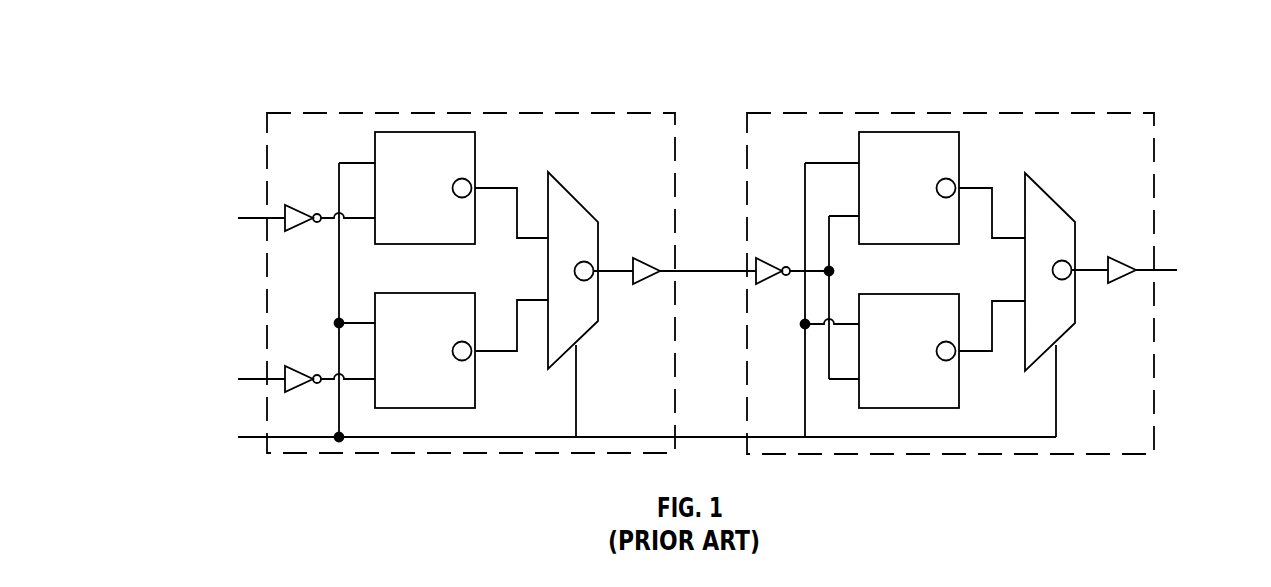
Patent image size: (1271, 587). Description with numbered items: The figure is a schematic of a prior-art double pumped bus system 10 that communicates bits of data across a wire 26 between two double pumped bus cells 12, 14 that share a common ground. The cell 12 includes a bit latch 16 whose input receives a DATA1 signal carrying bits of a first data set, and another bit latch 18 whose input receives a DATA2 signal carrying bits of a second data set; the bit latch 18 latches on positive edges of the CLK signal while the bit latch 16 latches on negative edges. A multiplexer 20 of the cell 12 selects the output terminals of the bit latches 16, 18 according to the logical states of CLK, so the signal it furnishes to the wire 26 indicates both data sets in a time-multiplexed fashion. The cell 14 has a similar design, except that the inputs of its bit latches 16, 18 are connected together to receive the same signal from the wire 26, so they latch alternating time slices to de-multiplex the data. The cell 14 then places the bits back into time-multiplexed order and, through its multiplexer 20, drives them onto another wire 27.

The double pumped bus system 10 is at (846, 71).
The double pumped bus cell 12 is at (480, 113).
The double pumped bus cell 14 is at (985, 113).
The bit latch 16 is at (375, 142).
The bit latch 18 is at (442, 408).
The multiplexer 20 is at (583, 203).
The wire 26 is at (700, 271).
The wire 27 is at (1163, 270).